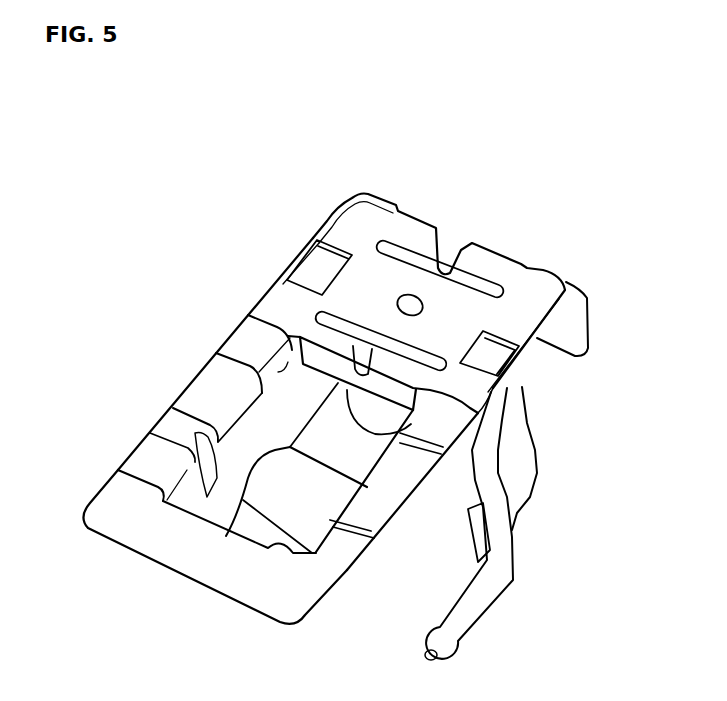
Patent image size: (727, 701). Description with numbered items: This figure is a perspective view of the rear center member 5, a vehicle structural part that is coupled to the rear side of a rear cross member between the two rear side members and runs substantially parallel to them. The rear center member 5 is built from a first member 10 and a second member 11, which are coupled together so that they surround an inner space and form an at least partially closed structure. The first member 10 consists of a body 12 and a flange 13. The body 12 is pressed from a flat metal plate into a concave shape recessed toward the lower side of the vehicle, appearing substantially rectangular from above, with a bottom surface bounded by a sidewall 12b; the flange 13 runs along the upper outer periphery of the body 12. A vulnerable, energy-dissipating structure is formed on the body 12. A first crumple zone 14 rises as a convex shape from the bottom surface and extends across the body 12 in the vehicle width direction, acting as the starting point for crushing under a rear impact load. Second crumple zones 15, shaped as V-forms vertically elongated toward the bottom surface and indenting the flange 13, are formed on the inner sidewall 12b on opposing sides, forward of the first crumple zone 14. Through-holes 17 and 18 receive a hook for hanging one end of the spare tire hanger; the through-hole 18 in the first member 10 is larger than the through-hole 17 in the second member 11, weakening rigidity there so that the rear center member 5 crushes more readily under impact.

The rear center member 5 is at (224, 345).
The first member 10 is at (197, 390).
The second member 11 is at (338, 237).
The body 12 is at (348, 452).
The sidewall 12b is at (243, 332).
The flange 13 is at (193, 555).
The first crumple zone 14 is at (288, 473).
The second crumple zone 15 is at (187, 470).
The through-hole 17 is at (405, 300).
The through-hole 18 is at (382, 418).